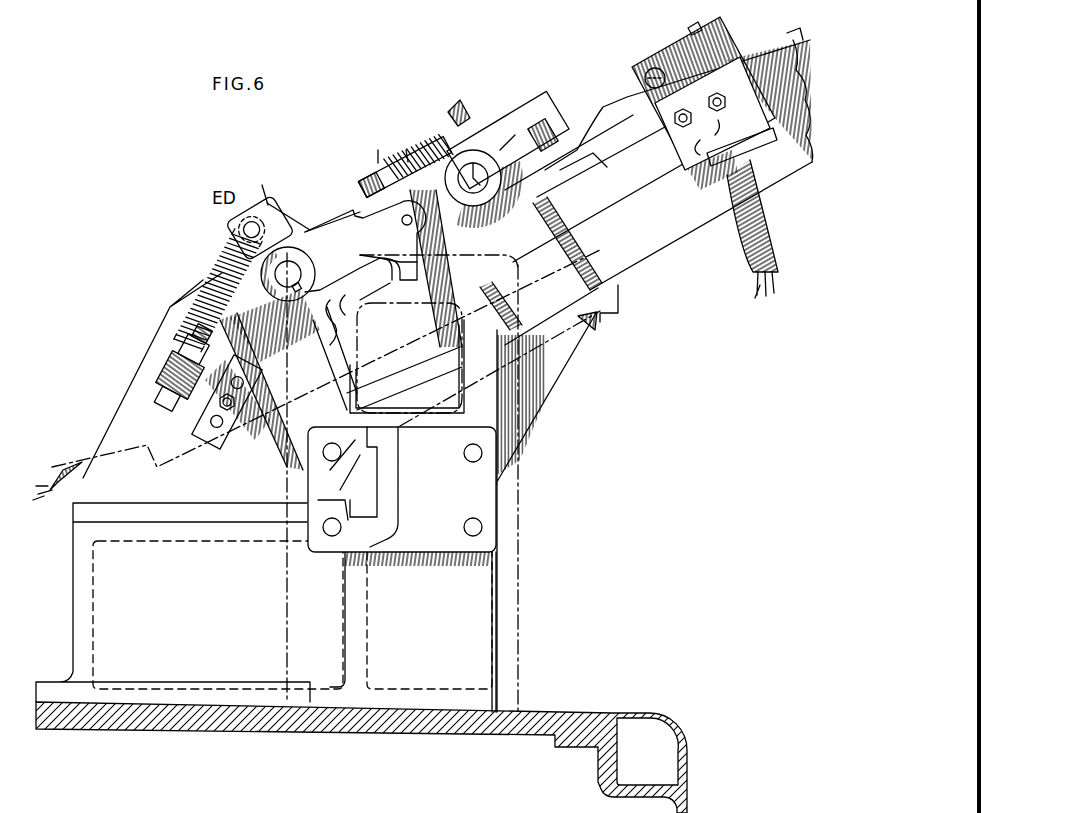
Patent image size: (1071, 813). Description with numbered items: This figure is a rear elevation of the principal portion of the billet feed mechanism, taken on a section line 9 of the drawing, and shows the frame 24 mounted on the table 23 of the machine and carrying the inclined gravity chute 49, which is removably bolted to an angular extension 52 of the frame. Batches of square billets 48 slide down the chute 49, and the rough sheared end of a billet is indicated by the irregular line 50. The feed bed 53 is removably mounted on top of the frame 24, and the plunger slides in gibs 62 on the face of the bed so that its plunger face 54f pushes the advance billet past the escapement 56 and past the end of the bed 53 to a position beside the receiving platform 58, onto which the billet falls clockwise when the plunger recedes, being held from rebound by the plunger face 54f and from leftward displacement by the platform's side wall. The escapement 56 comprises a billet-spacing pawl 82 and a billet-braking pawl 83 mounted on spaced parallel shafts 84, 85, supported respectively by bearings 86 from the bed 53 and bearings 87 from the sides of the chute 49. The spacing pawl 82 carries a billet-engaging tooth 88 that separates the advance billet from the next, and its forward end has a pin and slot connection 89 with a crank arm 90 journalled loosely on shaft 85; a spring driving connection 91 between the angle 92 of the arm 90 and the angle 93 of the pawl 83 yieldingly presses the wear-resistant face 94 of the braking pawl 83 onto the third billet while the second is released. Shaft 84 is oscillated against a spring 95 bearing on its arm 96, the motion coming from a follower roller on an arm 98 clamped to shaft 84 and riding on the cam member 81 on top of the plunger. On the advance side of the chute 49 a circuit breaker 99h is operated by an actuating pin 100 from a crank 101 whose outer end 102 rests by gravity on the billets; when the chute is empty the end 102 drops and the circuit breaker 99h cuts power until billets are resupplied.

The section line 9- 9 is at (54, 473).
The table 23 is at (127, 730).
The frame 24 is at (75, 592).
The billets 48 is at (380, 262).
The chute 49 is at (682, 230).
The irregular line 50 is at (335, 358).
The angular extension 52 is at (603, 300).
The feed bed 53 is at (175, 310).
The plunger face 54f is at (347, 395).
The escapement 56 is at (359, 246).
The receiving platform 58 is at (448, 415).
The gibs 62 is at (468, 347).
The cam member 81 is at (287, 380).
The billet-spacing pawl 82 is at (375, 220).
The billet-braking pawl 83 is at (528, 128).
The shaft 84 is at (283, 262).
The shaft 85 is at (473, 163).
The bearings 86 is at (256, 805).
The bearings 87 is at (500, 148).
The billet-engaging tooth 88 is at (392, 284).
The pin and slot connection 89 is at (378, 150).
The crank arm 90 is at (440, 138).
The spring driving connection 91 is at (401, 147).
The angle 92 is at (375, 175).
The angle 93 is at (462, 108).
The wear-resistant face 94 is at (580, 203).
The spring 95 is at (232, 244).
The arm 96 is at (263, 182).
The arm 98 is at (548, 486).
The circuit breaker 99h is at (717, 82).
The actuating pin 100 is at (722, 26).
The crank 101 is at (643, 90).
The outer end 102 is at (585, 138).